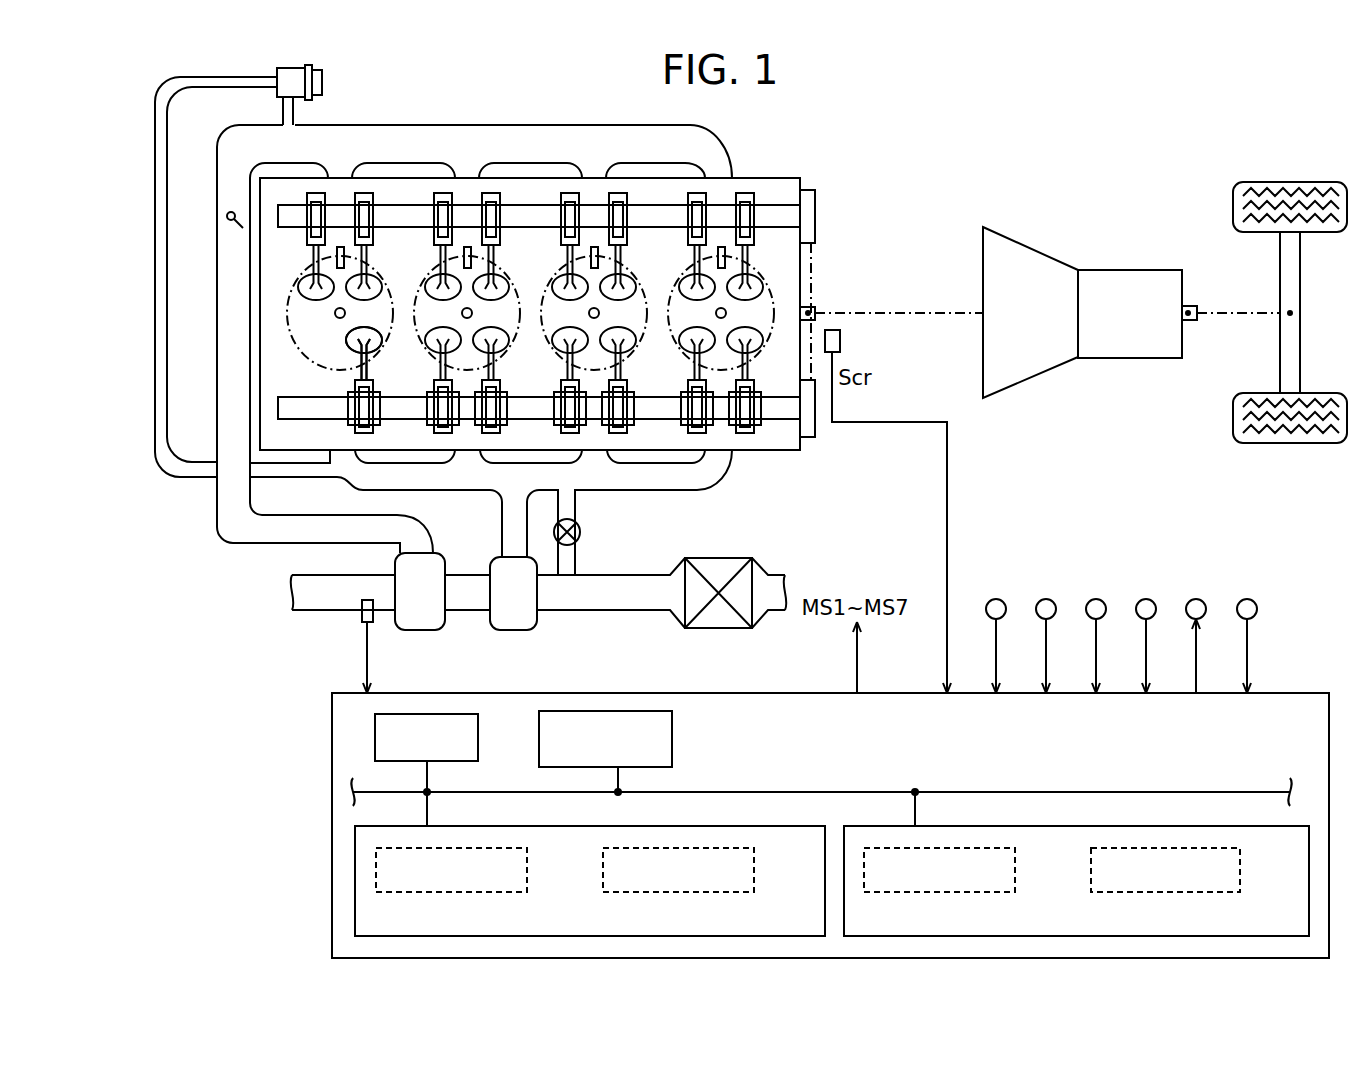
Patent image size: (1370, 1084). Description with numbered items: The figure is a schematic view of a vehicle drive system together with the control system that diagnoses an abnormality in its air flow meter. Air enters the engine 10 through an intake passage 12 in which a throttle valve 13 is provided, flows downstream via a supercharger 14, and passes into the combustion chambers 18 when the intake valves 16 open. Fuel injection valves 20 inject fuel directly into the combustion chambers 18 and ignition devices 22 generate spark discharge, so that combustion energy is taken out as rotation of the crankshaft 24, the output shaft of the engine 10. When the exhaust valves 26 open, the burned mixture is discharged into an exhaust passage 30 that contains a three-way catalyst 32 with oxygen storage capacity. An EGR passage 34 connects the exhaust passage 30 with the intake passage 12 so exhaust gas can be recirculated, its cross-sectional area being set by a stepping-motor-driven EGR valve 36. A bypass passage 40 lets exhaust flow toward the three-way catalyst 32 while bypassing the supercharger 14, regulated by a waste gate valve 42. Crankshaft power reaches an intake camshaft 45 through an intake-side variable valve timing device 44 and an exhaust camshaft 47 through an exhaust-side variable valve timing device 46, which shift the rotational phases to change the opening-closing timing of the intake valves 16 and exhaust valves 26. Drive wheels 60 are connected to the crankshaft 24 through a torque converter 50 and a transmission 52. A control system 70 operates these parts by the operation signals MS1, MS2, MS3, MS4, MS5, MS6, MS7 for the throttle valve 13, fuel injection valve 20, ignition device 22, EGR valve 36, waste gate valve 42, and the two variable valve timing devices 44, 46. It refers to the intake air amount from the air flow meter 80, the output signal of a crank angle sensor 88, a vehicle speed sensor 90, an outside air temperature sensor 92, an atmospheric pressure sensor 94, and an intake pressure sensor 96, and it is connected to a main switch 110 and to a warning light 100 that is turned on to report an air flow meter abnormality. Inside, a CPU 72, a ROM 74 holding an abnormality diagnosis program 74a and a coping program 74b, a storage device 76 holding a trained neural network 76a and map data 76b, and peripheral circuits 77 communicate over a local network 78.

The engine 10 is at (804, 142).
The intake passage 12 is at (322, 577).
The throttle valve 13 is at (227, 213).
The supercharger 14 is at (462, 640).
The intake valves 16 is at (311, 265).
The combustion chambers 18 is at (326, 313).
The fuel injection valves 20 is at (341, 247).
The ignition devices 22 is at (348, 310).
The crankshaft 24 is at (807, 300).
The exhaust valves 26 is at (370, 395).
The exhaust passage 30 is at (697, 490).
The three-way catalyst 32 is at (723, 558).
The EGR passage 34 is at (170, 118).
The EGR valve 36 is at (300, 98).
The bypass passage 40 is at (575, 560).
The waste gate valve 42 is at (580, 527).
The intake-side variable valve timing device 44 is at (816, 226).
The intake camshaft 45 is at (763, 205).
The exhaust-side variable valve timing device 46 is at (808, 437).
The exhaust camshaft 47 is at (782, 425).
The torque converter 50 is at (1030, 247).
The transmission 52 is at (1130, 270).
The drive wheels 60 is at (1292, 182).
The control system 70 is at (1285, 683).
The central processing unit (CPU) 72 is at (482, 742).
The ROM 74 is at (722, 823).
The abnormality diagnosis program 74a is at (530, 871).
The coping program 74b is at (757, 871).
The storage device 76 is at (1225, 822).
The trained neural network 76a is at (1018, 870).
The map data 76b is at (1244, 870).
The peripheral circuits 77 is at (675, 742).
The local network 78 is at (1216, 792).
The air flow meter 80 is at (360, 617).
The crank angle sensor 88 is at (841, 340).
The vehicle speed sensor 90 is at (996, 598).
The outside air temperature sensor 92 is at (1046, 598).
The atmospheric pressure sensor 94 is at (1096, 598).
The intake pressure sensor 96 is at (1146, 598).
The warning light 100 is at (1196, 598).
The main switch 110 is at (1247, 598).
The operation signal of throttle valve MS1 is at (220, 229).
The operation signal of fuel injection valve MS2 is at (734, 256).
The operation signal of ignition device MS3 is at (737, 317).
The operation signal of EGR valve MS4 is at (332, 88).
The operation signal of waste gate valve MS5 is at (592, 536).
The operation signal of intake-side variable valve timing device MS6 is at (821, 189).
The operation signal of exhaust-side variable valve timing device MS7 is at (820, 433).